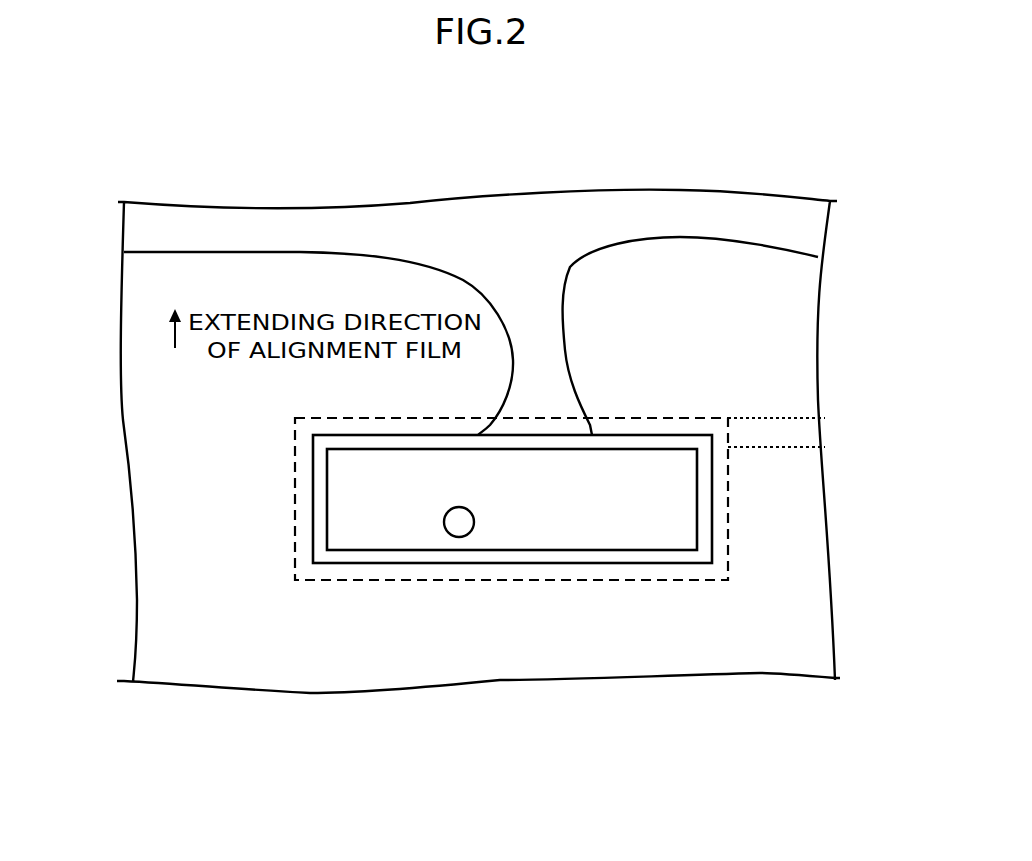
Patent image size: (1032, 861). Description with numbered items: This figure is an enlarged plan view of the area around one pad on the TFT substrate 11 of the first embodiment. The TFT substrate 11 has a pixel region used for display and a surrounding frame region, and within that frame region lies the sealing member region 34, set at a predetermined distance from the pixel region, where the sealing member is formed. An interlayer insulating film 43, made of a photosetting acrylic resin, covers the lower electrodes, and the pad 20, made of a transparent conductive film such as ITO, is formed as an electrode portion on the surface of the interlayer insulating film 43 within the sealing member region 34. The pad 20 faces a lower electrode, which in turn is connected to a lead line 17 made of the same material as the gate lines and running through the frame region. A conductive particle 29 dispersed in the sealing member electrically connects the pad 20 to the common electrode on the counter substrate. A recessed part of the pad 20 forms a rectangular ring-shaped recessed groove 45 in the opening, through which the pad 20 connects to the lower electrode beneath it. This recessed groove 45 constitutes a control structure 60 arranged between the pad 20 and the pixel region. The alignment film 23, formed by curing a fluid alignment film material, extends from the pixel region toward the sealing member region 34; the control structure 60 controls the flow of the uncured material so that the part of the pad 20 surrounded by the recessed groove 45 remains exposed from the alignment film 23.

The TFT substrate 11 is at (332, 87).
The lead line 17 is at (805, 433).
The pad 20 is at (585, 525).
The alignment film 23 is at (152, 411).
The conductive particle 29 is at (459, 522).
The sealing member region 34 is at (797, 330).
The interlayer insulating film 43 is at (512, 222).
The recessed groove 45 is at (653, 553).
The control structure 60 is at (521, 587).